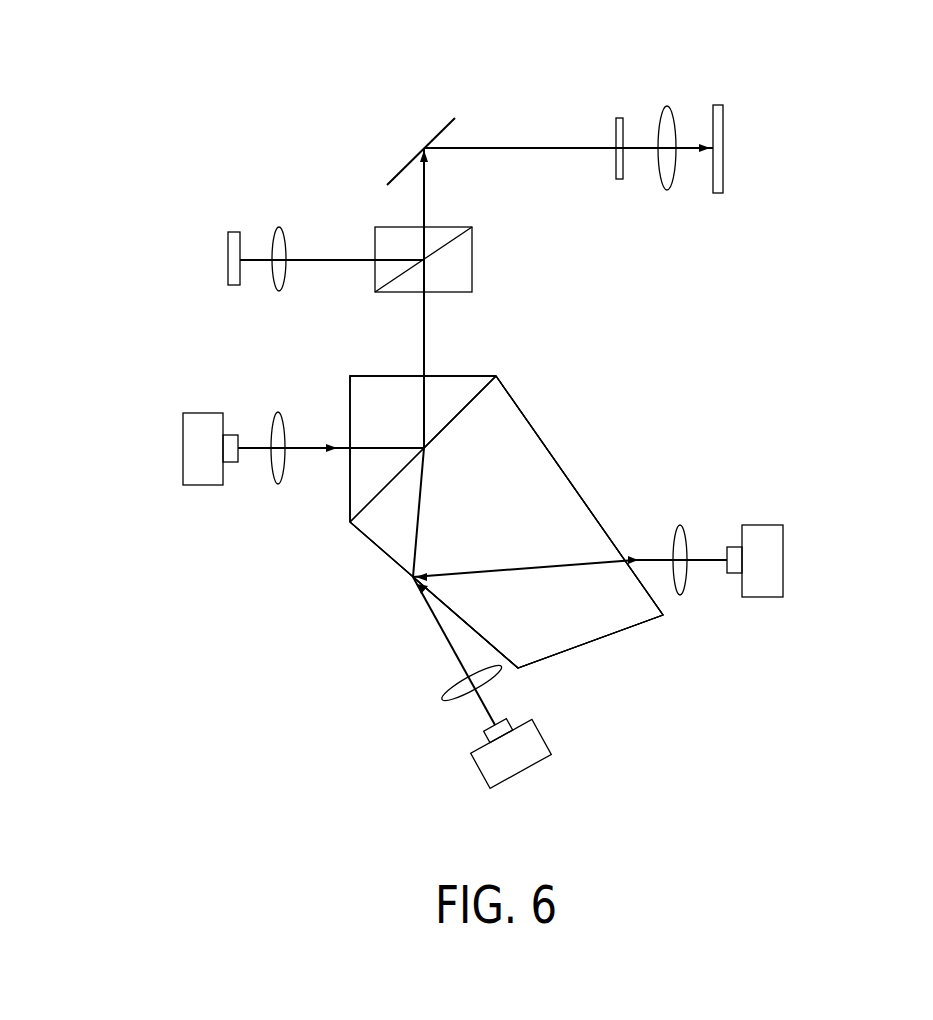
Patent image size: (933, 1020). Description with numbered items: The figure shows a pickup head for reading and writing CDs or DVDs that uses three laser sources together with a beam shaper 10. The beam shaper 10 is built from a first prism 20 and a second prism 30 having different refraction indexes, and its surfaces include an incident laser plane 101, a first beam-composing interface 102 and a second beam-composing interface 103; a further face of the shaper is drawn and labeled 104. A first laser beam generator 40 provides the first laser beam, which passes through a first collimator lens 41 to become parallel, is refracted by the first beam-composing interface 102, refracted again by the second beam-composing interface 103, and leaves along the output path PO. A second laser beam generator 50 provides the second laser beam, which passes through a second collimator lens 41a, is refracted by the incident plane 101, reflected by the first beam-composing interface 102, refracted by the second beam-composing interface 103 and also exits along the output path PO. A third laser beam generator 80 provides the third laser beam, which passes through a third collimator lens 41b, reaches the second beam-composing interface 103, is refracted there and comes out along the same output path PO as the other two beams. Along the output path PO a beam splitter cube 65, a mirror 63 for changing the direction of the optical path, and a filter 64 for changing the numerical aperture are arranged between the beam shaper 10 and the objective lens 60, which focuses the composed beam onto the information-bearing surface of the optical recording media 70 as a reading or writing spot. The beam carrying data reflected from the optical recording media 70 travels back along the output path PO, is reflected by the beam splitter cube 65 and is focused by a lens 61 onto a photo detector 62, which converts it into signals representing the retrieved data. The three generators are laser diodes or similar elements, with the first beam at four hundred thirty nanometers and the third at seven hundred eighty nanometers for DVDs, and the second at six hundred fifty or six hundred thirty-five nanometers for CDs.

The beam shaper 10 is at (288, 532).
The first prism 20 is at (558, 640).
The second prism 30 is at (443, 388).
The first laser beam generator 40 is at (513, 763).
The first collimator lens 41 is at (443, 700).
The second collimator lens 41a is at (678, 587).
The third collimator lens 41b is at (275, 430).
The second laser beam generator 50 is at (783, 538).
The objective lens 60 is at (667, 140).
The lens 61 is at (277, 250).
The photo detector 62 is at (228, 252).
The mirror 63 is at (398, 170).
The filter 64 is at (613, 142).
The beam splitter cube 65 is at (472, 273).
The optical recording media 70 is at (718, 177).
The third laser beam generator 80 is at (192, 450).
The incident laser plane 101 is at (563, 465).
The first beam-composing interface 102 is at (368, 540).
The second beam-composing interface 103 is at (478, 395).
The beam splitter section 104 is at (383, 373).
The output path PO is at (427, 203).